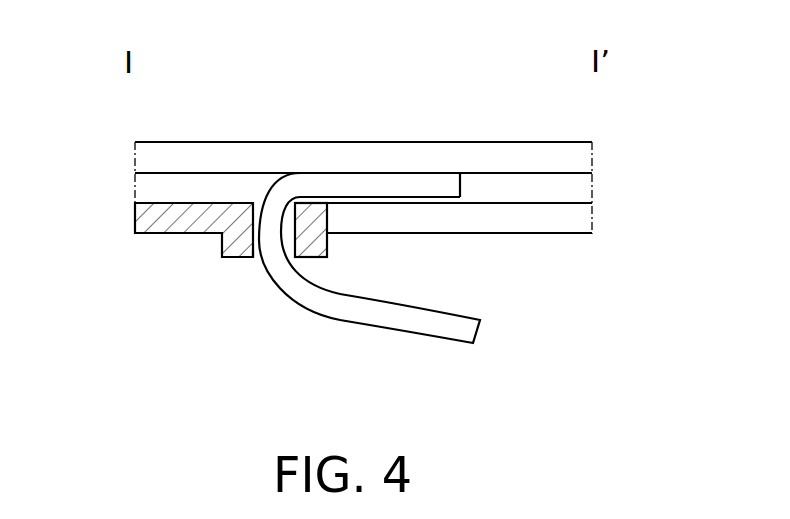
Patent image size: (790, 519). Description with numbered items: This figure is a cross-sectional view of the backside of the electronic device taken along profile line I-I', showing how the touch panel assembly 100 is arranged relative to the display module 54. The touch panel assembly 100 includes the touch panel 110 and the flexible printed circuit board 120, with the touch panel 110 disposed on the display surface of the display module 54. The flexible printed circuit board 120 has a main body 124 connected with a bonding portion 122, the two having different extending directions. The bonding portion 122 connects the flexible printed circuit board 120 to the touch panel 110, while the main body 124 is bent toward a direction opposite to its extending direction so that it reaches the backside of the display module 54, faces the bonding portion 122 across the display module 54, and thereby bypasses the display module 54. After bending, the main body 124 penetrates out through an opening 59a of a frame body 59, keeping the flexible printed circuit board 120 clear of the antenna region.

The touch panel assembly 100 is at (657, 382).
The touch panel 110 is at (580, 158).
The display module 54 is at (580, 220).
The frame body 59 is at (145, 218).
The opening 59a is at (256, 258).
The flexible printed circuit board 120 is at (433, 70).
The bonding portion 122 is at (348, 181).
The main body 124 is at (413, 313).